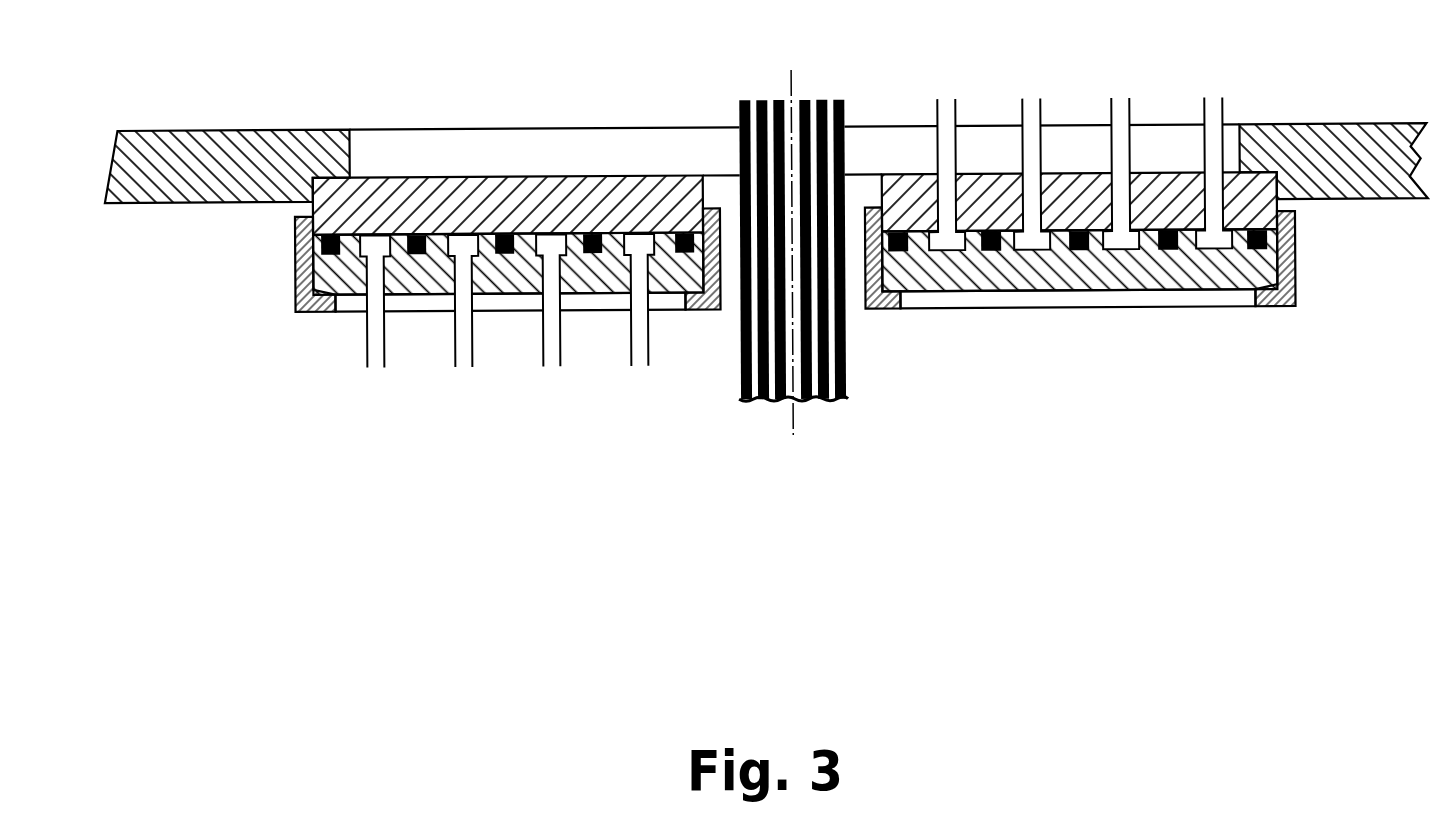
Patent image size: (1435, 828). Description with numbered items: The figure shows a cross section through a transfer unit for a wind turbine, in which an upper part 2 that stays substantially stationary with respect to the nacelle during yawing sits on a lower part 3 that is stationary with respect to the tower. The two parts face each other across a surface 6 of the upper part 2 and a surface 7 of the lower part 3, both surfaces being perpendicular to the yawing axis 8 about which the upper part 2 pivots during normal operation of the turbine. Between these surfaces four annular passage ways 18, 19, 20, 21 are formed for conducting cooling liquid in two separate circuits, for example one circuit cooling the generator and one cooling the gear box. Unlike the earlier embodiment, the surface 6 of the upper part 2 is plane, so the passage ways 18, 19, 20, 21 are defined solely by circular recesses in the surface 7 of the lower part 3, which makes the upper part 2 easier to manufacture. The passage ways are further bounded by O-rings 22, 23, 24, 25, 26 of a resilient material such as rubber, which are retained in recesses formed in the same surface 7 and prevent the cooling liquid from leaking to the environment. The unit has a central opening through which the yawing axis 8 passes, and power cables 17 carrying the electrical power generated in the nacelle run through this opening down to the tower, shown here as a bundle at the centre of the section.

The upper part 2 is at (1287, 208).
The lower part 3 is at (1227, 312).
The surface of the upper part 6 is at (884, 228).
The surface of the lower part 7 is at (920, 252).
The yawing axis 8 is at (798, 75).
The power cables 17 is at (779, 100).
The passage way 18 is at (632, 233).
The passage way 19 is at (557, 233).
The passage way 20 is at (460, 233).
The passage way 21 is at (377, 233).
The O-ring 22 is at (690, 251).
The O-ring 23 is at (600, 249).
The O-ring 24 is at (512, 248).
The O-ring 25 is at (432, 235).
The O-ring 26 is at (352, 308).